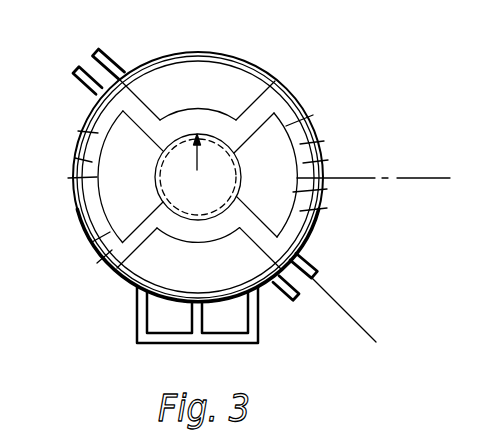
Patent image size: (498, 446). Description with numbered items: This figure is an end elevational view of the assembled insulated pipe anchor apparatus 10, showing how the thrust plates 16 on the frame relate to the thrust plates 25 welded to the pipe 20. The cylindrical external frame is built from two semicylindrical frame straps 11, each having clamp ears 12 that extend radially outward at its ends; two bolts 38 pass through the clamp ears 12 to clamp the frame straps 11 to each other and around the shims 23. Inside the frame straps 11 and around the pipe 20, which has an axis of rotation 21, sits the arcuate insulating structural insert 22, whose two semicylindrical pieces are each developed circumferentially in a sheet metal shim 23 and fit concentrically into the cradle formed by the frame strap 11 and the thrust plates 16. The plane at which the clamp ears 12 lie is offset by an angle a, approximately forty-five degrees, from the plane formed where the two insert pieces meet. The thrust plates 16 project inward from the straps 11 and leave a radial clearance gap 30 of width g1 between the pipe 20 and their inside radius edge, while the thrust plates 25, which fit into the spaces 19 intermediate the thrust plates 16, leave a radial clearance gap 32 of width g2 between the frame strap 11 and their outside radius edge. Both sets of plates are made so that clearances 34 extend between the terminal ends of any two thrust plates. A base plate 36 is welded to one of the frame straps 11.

The insulated pipe anchor apparatus 10 is at (366, 137).
The frame strap 11 is at (236, 51).
The clamp ear 12 is at (102, 45).
The thrust plate 16 is at (242, 72).
The space 19 is at (90, 96).
The pipe 20 is at (191, 108).
The axis of rotation 21 is at (200, 177).
The insulating structural insert 22 is at (324, 141).
The shim 23 is at (328, 160).
The thrust plate 25 is at (308, 118).
The radial clearance gap 30 is at (235, 118).
The radial clearance gap 32 is at (101, 210).
The clearance 34 is at (133, 113).
The base plate 36 is at (228, 344).
The bolt 38 is at (118, 62).
The width of radial clearance gap g1 is at (197, 75).
The width of radial clearance gap g2 is at (72, 204).
The angle a is at (420, 178).